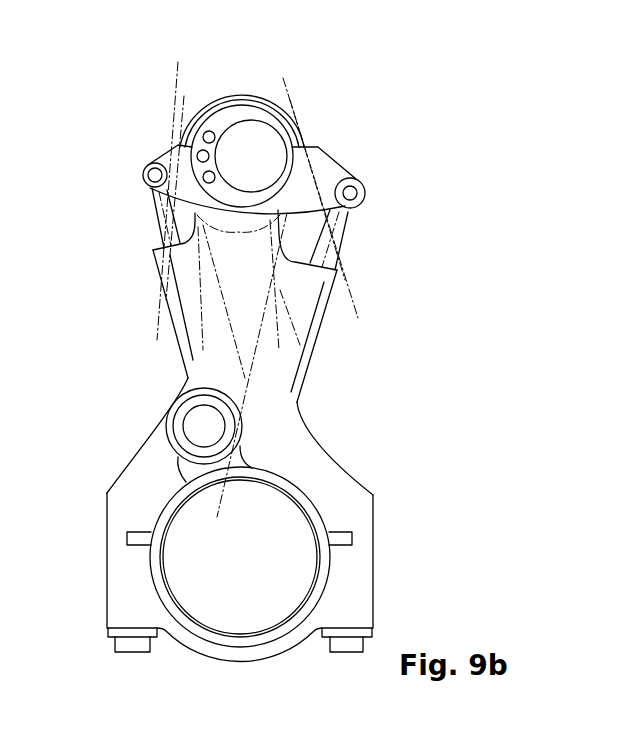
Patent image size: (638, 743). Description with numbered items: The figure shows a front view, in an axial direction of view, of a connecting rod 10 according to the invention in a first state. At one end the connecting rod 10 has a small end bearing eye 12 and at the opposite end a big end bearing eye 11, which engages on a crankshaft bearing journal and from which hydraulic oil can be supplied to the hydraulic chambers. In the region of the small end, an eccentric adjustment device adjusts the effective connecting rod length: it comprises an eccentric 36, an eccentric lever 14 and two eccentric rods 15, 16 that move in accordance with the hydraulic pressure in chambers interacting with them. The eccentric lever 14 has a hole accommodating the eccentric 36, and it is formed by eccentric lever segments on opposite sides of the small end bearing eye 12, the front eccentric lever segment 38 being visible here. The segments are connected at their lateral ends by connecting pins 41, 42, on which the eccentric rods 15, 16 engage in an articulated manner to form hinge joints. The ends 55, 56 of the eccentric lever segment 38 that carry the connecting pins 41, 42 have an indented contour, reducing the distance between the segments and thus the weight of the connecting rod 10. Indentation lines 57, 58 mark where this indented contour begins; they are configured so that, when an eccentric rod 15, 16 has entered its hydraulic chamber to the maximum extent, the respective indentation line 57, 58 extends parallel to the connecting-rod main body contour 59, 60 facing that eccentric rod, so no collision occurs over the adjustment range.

The connecting rod 10 is at (406, 89).
The big end bearing eye 11 is at (288, 568).
The small end bearing eye 12 is at (247, 90).
The eccentric lever 14 is at (271, 153).
The eccentric lever segment 38 is at (331, 167).
The eccentric rod 15 is at (157, 205).
The eccentric rod 16 is at (343, 227).
The eccentric 36 is at (227, 113).
The connecting pin 41 is at (149, 177).
The connecting pin 42 is at (360, 197).
The end of eccentric lever segment 55 is at (144, 160).
The end of eccentric lever segment 56 is at (376, 172).
The indentation line 57 is at (177, 80).
The indentation line 58 is at (285, 84).
The connecting-rod main body contour 59 is at (233, 352).
The connecting-rod main body contour 60 is at (260, 367).